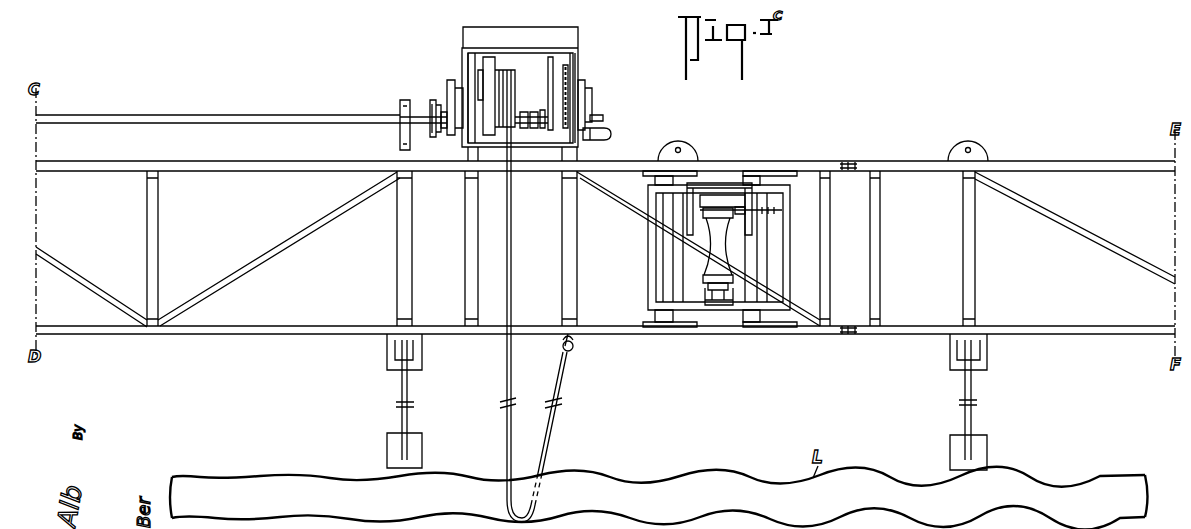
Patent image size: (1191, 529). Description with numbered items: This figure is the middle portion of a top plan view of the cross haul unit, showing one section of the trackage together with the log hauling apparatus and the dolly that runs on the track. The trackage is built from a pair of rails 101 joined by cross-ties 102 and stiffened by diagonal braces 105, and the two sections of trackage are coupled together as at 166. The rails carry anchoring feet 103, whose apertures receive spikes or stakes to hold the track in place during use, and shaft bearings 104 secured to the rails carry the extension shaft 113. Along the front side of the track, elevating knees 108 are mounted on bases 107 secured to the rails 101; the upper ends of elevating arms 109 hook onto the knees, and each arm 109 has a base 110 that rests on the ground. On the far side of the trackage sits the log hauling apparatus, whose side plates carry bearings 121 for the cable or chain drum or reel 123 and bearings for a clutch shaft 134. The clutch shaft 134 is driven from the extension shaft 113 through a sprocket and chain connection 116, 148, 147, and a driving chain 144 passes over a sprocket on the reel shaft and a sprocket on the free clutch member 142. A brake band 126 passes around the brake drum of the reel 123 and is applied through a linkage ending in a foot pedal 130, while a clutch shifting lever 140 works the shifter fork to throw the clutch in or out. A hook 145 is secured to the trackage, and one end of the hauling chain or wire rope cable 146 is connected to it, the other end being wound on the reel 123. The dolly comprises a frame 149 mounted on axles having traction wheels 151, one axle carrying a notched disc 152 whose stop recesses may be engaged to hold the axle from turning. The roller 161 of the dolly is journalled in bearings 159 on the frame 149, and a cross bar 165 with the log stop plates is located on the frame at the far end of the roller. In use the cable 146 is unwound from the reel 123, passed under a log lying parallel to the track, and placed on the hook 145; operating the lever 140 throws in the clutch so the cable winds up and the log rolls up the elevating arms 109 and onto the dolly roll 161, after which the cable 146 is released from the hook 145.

The rails 101 is at (252, 175).
The cross-ties 102 is at (158, 247).
The anchoring feet 103 is at (688, 148).
The shaft bearings 104 is at (403, 112).
The diagonal braces 105 is at (296, 243).
The bases 107 is at (952, 357).
The elevating knees 108 is at (982, 354).
The elevating arms 109 is at (974, 390).
The base 110 is at (986, 450).
The extension shaft 113 is at (289, 118).
The sprocket and chain connection 116 is at (431, 110).
The bearings 121 is at (592, 92).
The cable or chain drum or reel 123 is at (526, 84).
The brake band 126 is at (483, 52).
The foot pedal 130 is at (609, 132).
The clutch shaft 134 is at (516, 115).
The clutch shifting lever 140 is at (603, 116).
The free clutch member 142 is at (546, 130).
The driving chain 144 is at (570, 73).
The hook 145 is at (574, 345).
The hauling chain or wire rope cable 146 is at (560, 433).
The sprocket and chain connection 147 is at (450, 100).
The sprocket and chain connection 148 is at (443, 130).
The frame 149 is at (648, 243).
The traction wheels 151 is at (684, 330).
The notched disc 152 is at (780, 210).
The bearings 159 is at (716, 305).
The roller 161 is at (717, 252).
The cross bar 165 is at (710, 197).
The coupling 166 is at (855, 160).